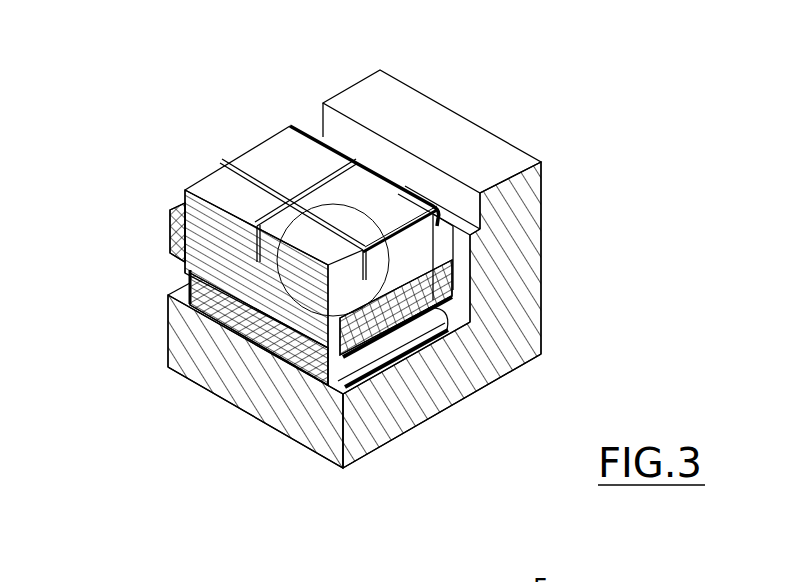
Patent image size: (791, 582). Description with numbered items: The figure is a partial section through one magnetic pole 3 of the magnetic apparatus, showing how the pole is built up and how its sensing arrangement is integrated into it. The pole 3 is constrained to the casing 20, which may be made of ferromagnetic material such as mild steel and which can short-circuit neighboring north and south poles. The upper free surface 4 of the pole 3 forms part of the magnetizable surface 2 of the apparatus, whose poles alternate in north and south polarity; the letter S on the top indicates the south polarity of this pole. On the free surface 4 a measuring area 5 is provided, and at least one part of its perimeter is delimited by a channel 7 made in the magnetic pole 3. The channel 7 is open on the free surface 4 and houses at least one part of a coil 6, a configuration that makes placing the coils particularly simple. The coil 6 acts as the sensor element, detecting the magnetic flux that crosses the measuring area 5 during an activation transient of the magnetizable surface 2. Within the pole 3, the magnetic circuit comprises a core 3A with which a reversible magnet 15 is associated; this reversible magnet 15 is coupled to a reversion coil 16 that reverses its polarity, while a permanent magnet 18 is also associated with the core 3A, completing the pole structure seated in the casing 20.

The magnetizable surface 2 is at (306, 128).
The magnetic pole 3 is at (392, 159).
The core 3A is at (187, 212).
The free surface 4 is at (377, 190).
The measuring area 5 is at (267, 138).
The coil 6 is at (432, 212).
The channel 7 is at (222, 162).
The reversible magnet 15 is at (257, 337).
The reversion coil 16 is at (390, 348).
The permanent magnet 18 is at (447, 302).
The casing 20 is at (300, 403).